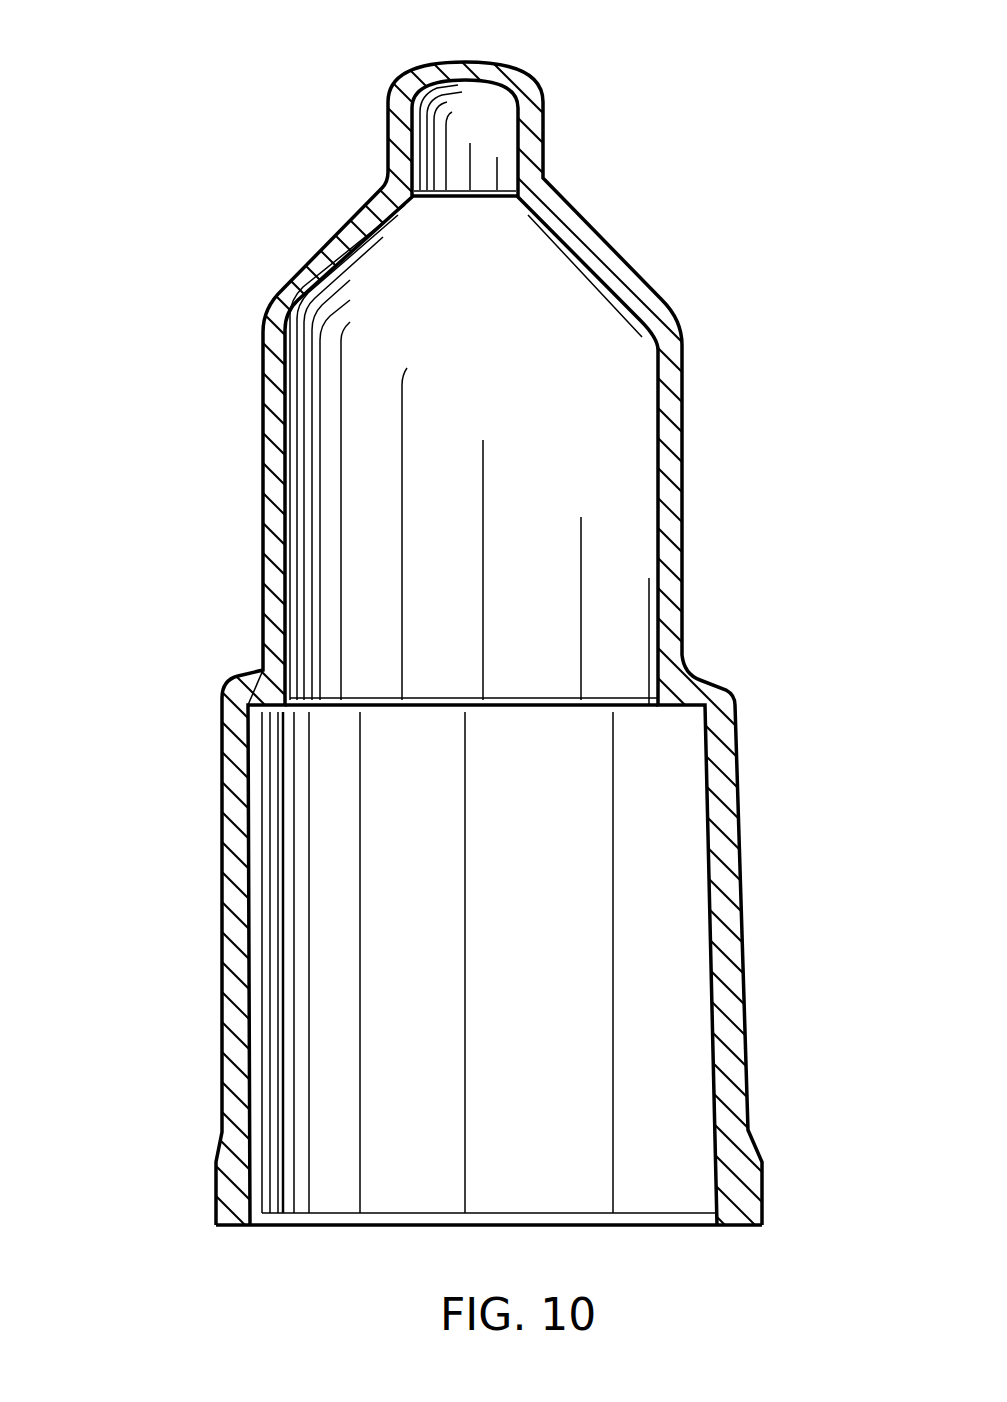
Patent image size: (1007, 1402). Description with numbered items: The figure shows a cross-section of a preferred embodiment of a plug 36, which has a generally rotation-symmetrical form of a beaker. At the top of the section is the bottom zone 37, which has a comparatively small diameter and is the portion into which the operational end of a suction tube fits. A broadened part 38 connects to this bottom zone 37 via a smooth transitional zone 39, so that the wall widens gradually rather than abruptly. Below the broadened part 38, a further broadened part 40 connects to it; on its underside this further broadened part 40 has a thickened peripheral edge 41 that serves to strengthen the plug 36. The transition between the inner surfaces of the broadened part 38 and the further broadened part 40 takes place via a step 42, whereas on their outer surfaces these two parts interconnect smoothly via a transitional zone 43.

The plug 36 is at (703, 284).
The bottom zone 37 is at (548, 93).
The broadened part 38 is at (270, 490).
The transitional zone 39 is at (360, 215).
The further broadened part 40 is at (235, 1000).
The thickened peripheral edge 41 is at (235, 1168).
The step 42 is at (278, 712).
The transitional zone 43 is at (255, 675).